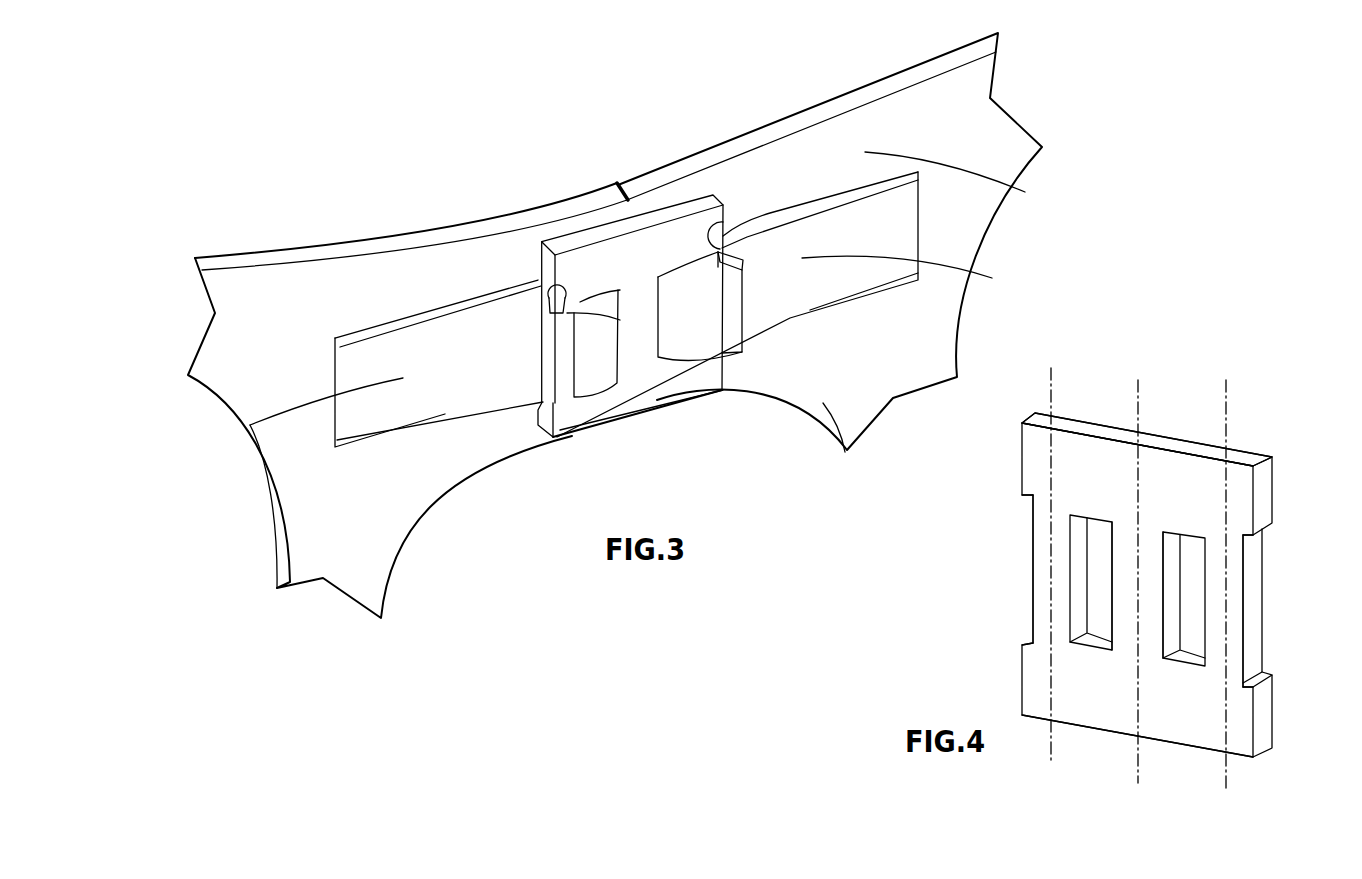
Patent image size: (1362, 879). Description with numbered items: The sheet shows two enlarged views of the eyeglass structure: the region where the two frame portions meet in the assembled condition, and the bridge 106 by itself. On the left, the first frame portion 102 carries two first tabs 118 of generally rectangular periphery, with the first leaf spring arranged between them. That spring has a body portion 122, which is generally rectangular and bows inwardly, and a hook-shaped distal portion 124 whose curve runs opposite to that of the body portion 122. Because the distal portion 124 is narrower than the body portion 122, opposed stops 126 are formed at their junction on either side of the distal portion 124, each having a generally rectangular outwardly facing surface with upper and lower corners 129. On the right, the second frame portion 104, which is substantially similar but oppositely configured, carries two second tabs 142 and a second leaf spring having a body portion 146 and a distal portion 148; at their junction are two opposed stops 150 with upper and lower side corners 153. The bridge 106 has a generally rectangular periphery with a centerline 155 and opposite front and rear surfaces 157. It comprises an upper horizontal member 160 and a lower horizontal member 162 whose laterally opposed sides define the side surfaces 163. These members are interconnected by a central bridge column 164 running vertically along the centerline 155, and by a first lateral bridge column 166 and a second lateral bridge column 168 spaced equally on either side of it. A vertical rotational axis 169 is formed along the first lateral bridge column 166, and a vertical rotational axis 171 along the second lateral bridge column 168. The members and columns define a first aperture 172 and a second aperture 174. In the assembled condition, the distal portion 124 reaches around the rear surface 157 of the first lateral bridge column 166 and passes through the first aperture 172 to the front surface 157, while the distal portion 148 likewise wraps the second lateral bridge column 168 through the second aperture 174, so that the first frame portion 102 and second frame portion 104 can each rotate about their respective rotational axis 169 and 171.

In FIG. 3, the first frame portion 102 is at (269, 183).
In FIG. 3, the second frame portion 104 is at (802, 83).
In FIG. 4, the bridge 106 is at (1180, 368).
In FIG. 3, the first tabs 118 is at (452, 277).
In FIG. 3, the body portion 122 is at (250, 425).
In FIG. 3, the distal portion 124 is at (590, 357).
In FIG. 3, the opposed stops 126 is at (547, 298).
In FIG. 3, the upper and lower corners 129 is at (549, 300).
In FIG. 3, the second tabs 142 is at (752, 473).
In FIG. 3, the body portion 146 is at (915, 273).
In FIG. 3, the distal portion 148 is at (718, 315).
In FIG. 3, the opposed stops 150 is at (717, 255).
In FIG. 3, the upper and lower side corners 153 is at (743, 257).
In FIG. 4, the centerline 155 is at (1139, 595).
In FIG. 4, the front and rear surfaces 157 is at (1248, 452).
In FIG. 4, the upper horizontal member 160 is at (1090, 482).
In FIG. 4, the lower horizontal member 162 is at (1107, 695).
In FIG. 4, the side surfaces 163 is at (1012, 478).
In FIG. 4, the central bridge column 164 is at (1148, 547).
In FIG. 4, the first lateral bridge column 166 is at (1045, 590).
In FIG. 4, the second lateral bridge column 168 is at (1233, 610).
In FIG. 4, the vertical rotational axis 169 is at (1052, 582).
In FIG. 4, the vertical rotational axis 171 is at (1228, 596).
In FIG. 4, the first aperture 172 is at (1102, 602).
In FIG. 4, the second aperture 174 is at (1193, 622).